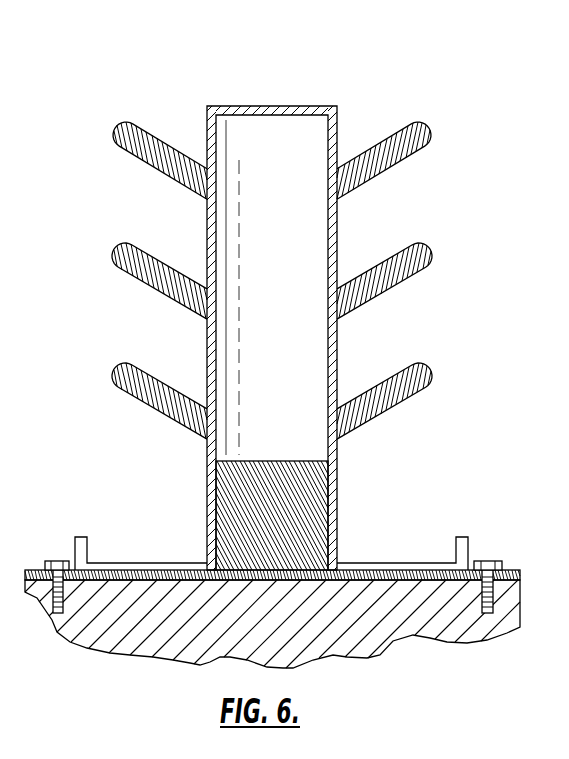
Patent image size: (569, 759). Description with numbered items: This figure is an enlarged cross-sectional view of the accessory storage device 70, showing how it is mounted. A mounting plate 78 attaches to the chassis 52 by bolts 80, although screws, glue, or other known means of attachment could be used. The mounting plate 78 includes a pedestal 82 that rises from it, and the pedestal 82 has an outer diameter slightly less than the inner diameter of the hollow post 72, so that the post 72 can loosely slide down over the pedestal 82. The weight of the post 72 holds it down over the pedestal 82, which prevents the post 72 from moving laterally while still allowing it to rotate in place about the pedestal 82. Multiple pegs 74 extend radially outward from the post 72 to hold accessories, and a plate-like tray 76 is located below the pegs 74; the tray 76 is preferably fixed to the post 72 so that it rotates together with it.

The chassis 52 is at (337, 602).
The storage device 70 is at (248, 289).
The post 72 is at (268, 106).
The pegs 74 is at (113, 123).
The tray 76 is at (82, 537).
The mounting plate 78 is at (122, 577).
The bolts 80 is at (62, 561).
The pedestal 82 is at (275, 461).